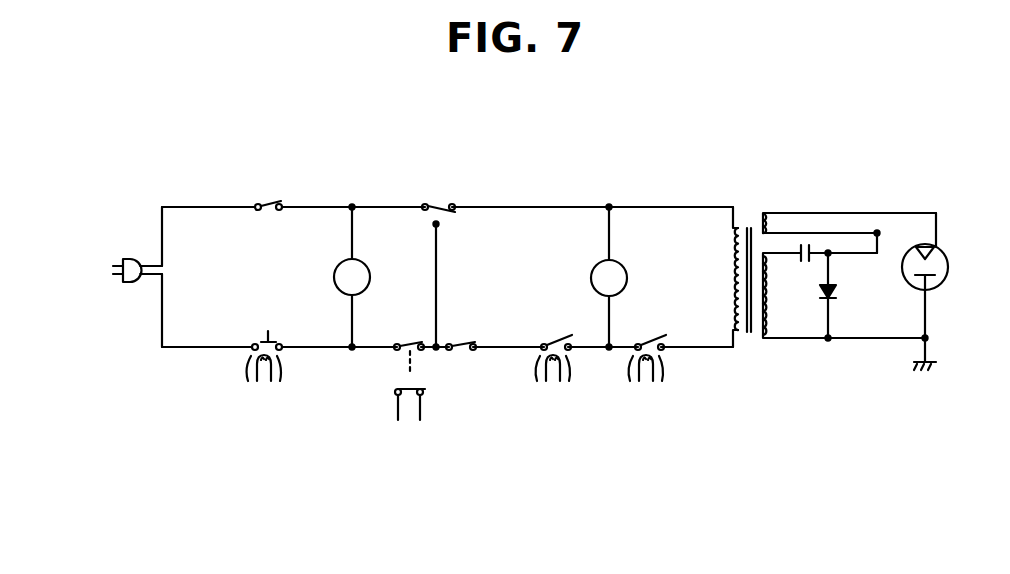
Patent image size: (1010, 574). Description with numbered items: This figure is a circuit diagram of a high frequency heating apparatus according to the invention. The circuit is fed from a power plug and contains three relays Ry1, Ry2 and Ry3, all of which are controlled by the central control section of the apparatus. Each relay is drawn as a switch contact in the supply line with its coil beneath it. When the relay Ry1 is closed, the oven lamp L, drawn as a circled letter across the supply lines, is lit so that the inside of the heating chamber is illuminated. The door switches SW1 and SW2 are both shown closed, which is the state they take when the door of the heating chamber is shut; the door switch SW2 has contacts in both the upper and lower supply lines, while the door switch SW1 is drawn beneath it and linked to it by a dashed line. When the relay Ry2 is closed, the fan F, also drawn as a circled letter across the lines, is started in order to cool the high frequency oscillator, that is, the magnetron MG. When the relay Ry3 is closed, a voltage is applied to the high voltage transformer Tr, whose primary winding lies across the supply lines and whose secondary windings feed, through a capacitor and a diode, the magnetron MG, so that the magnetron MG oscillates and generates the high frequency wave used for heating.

The oven lamp L is at (352, 277).
The fan F is at (609, 277).
The relay Ry1 is at (264, 372).
The relay Ry2 is at (557, 375).
The relay Ry3 is at (650, 375).
The door switch SW1 is at (427, 395).
The door switch SW2 is at (455, 213).
The high voltage transformer Tr is at (750, 336).
The magnetron MG is at (947, 260).